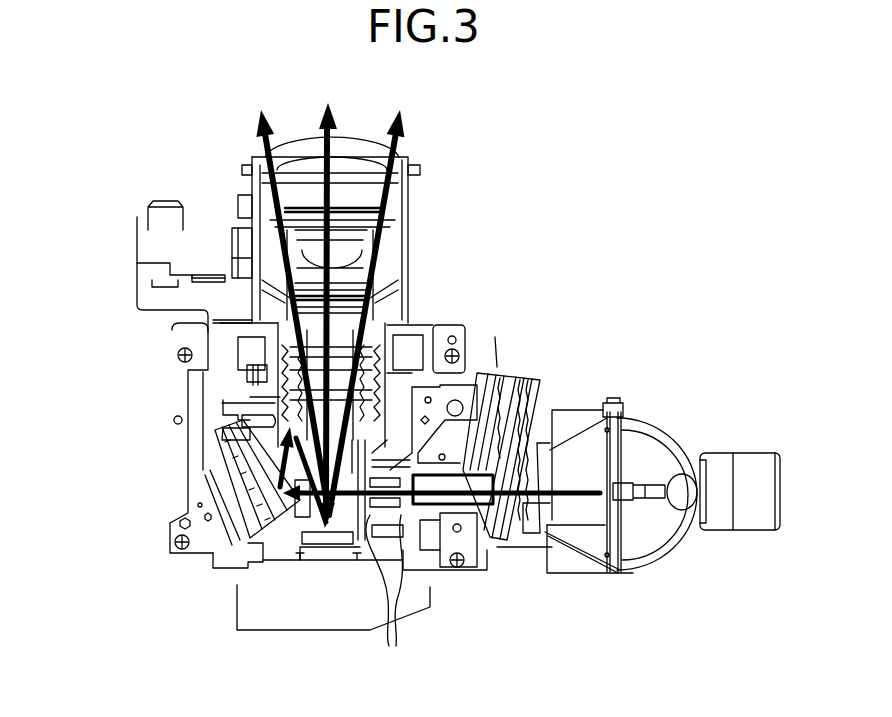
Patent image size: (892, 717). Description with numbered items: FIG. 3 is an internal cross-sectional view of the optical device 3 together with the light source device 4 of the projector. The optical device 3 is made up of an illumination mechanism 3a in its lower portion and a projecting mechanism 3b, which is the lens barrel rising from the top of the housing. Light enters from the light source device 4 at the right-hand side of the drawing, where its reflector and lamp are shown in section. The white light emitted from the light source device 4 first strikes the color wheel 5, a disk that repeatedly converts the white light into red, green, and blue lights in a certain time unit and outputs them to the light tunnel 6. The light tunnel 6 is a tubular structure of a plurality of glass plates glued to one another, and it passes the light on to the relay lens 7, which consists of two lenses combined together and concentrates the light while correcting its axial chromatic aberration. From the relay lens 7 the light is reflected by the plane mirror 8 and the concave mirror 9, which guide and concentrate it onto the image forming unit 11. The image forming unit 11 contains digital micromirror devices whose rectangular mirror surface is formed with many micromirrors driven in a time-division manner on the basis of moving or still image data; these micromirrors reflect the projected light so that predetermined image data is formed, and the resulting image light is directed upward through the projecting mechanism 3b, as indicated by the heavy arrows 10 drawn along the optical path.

The optical device 3 is at (476, 300).
The illumination mechanism 3a is at (122, 325).
The projecting mechanism 3b is at (437, 201).
The light source device 4 is at (637, 586).
The color wheel 5 is at (547, 405).
The light tunnel 6 is at (479, 513).
The relay lens 7 is at (384, 593).
The plane mirror 8 is at (267, 488).
The concave mirror 9 is at (265, 427).
The light beam 10 is at (365, 134).
The image forming unit 11 is at (323, 550).